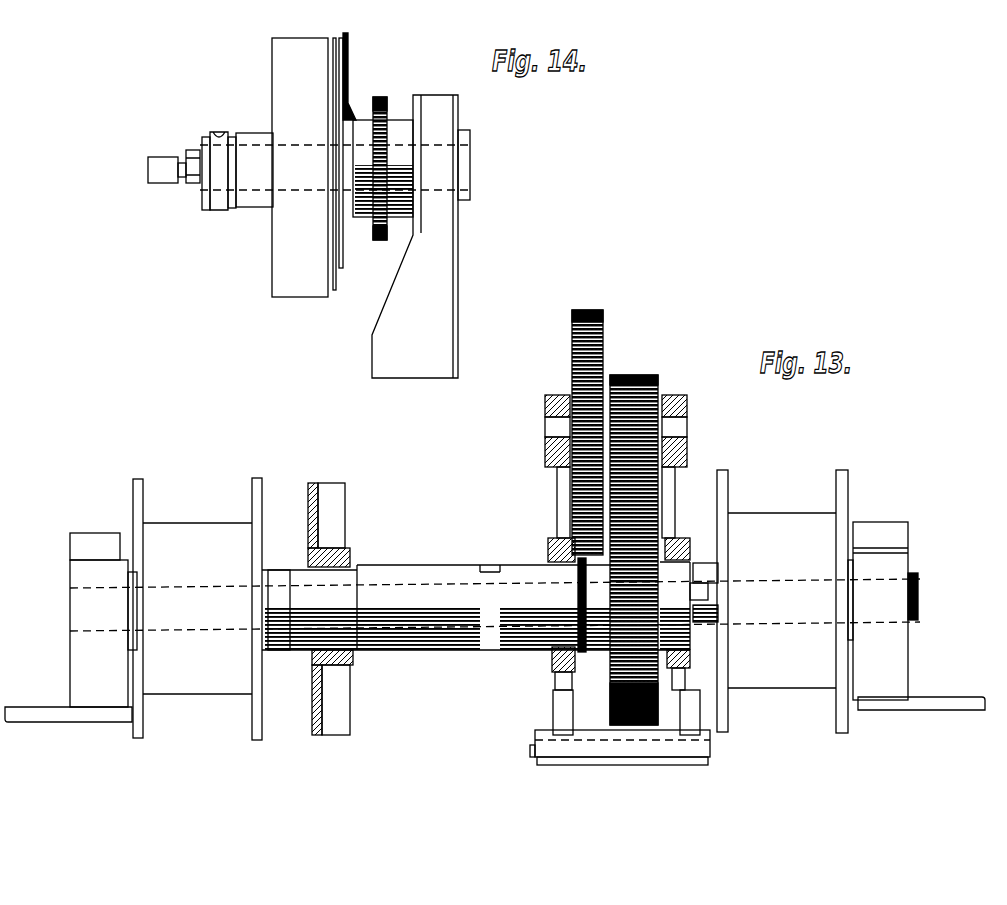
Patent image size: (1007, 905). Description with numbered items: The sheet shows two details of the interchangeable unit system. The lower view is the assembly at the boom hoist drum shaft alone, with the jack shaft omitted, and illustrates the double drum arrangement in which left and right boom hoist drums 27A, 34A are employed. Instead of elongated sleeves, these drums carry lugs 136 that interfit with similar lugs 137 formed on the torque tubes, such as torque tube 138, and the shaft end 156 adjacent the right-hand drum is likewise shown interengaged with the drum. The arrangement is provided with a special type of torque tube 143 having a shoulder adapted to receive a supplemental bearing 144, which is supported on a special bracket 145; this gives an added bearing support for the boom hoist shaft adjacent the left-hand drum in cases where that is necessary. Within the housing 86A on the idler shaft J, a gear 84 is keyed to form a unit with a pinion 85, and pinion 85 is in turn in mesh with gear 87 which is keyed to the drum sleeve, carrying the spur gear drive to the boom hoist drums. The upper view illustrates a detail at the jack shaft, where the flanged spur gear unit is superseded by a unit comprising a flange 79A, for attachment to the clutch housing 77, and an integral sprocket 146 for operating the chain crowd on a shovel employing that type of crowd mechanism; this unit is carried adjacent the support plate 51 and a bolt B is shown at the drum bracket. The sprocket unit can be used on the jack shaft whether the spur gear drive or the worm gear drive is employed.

In FIG. 14, the shaft end J is at (148, 168).
In FIG. 14, the clutch housing 77 is at (275, 47).
In FIG. 14, the flange 79A is at (346, 68).
In FIG. 14, the integral sprocket 146 is at (383, 100).
In FIG. 14, the support plate 51 is at (443, 115).
In FIG. 13, the gear 84 is at (598, 310).
In FIG. 13, the pinion 85 is at (635, 373).
In FIG. 13, the torque tube 143 is at (410, 553).
In FIG. 13, the torque tube 138 is at (518, 553).
In FIG. 13, the shaft end 156 is at (705, 563).
In FIG. 13, the lugs 137 is at (708, 598).
In FIG. 13, the lugs 136 is at (276, 657).
In FIG. 13, the supplemental bearing 144 is at (353, 652).
In FIG. 13, the special bracket 145 is at (340, 697).
In FIG. 13, the bearing bracket 86A is at (558, 700).
In FIG. 13, the gear 87 is at (645, 725).
In FIG. 13, the left boom hoist drum 27A is at (182, 680).
In FIG. 13, the right boom hoist drum 34A is at (762, 688).
In FIG. 13, the bolt B is at (915, 597).